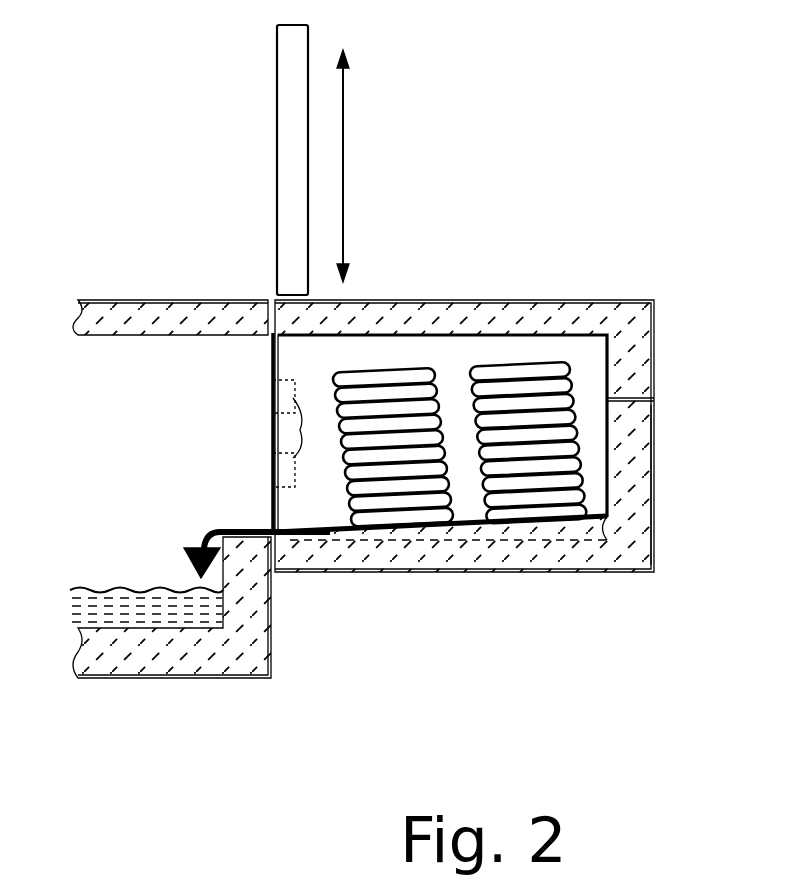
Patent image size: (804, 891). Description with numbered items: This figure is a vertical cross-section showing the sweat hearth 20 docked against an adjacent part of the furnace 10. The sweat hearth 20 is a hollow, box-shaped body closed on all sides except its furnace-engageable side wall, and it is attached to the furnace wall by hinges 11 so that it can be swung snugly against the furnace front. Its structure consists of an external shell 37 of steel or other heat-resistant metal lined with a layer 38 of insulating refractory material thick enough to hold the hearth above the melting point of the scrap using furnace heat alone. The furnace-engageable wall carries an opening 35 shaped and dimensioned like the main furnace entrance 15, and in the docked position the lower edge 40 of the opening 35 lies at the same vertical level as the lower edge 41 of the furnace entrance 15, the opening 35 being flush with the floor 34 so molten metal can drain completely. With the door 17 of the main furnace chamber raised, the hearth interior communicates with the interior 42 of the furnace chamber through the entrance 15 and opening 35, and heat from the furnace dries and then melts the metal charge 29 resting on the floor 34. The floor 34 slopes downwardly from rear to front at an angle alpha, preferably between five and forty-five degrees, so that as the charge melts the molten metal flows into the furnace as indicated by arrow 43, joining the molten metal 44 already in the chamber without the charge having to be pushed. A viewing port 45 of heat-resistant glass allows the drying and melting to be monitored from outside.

The furnace 10 is at (167, 280).
The hinges 11 is at (275, 432).
The main furnace entrance 15 is at (272, 513).
The door 17 is at (290, 135).
The sweat hearth 20 is at (616, 292).
The metal charge 29 is at (500, 367).
The floor 34 is at (582, 517).
The opening 35 is at (276, 366).
The external shell 37 is at (655, 437).
The layer of insulating refractory material 38 is at (640, 545).
The lower edge of the opening 40 is at (280, 545).
The lower edge of the furnace entrance 41 is at (172, 607).
The interior of the main furnace chamber 42 is at (128, 449).
The arrow 43 is at (190, 565).
The molten metal 44 is at (143, 595).
The viewing port 45 is at (630, 396).